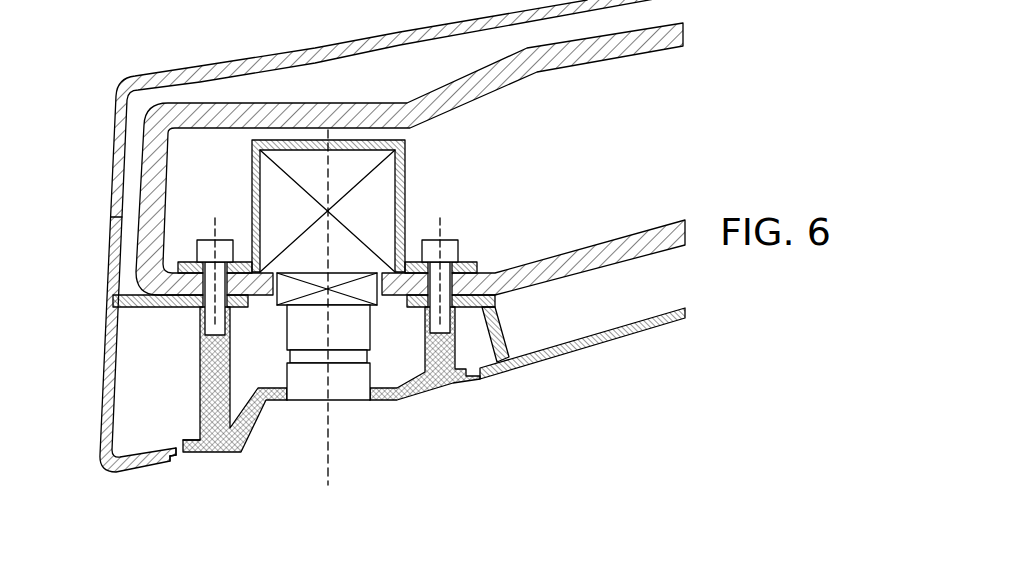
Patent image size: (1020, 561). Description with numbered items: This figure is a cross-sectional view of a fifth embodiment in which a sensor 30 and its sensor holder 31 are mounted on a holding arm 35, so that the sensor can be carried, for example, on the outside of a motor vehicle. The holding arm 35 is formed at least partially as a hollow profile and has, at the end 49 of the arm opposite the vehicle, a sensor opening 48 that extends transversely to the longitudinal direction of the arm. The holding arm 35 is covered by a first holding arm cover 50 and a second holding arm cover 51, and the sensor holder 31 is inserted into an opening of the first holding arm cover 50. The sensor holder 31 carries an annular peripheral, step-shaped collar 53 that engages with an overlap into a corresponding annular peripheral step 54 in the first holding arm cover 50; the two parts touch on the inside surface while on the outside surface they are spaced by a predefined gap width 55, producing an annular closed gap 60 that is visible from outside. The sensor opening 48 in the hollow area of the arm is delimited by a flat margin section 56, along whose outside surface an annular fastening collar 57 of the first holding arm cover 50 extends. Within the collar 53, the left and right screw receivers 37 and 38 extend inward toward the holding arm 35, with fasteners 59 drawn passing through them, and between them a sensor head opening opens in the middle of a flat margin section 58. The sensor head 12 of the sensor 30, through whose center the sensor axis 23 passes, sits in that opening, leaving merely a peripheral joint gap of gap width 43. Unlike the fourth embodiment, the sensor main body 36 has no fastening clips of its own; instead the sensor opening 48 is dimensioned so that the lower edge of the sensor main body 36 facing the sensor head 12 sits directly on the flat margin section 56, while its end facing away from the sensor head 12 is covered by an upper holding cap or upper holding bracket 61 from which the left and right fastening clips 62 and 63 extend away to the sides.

The sensor head 12 is at (327, 336).
The sensor axis 23 is at (363, 307).
The sensor 30 is at (353, 206).
The sensor holder 31 is at (321, 393).
The holding arm 35 is at (410, 184).
The sensor main body 36 is at (327, 211).
The left screw receiver 37 is at (201, 370).
The right screw receiver 38 is at (424, 348).
The gap width 43 is at (321, 379).
The sensor opening 48 is at (258, 307).
The end of the arm 49 is at (381, 248).
The first holding arm cover 50 is at (113, 250).
The second holding arm cover 51 is at (118, 188).
The step-shaped collar 53 is at (180, 436).
The annular peripheral step 54 is at (177, 458).
The gap width 55 is at (185, 463).
The flat margin section 56 is at (179, 262).
The annular fastening collar 57 is at (150, 308).
The flat margin section 58 is at (273, 387).
The fastener 59 is at (207, 242).
The annular closed gap 60 is at (476, 382).
The upper holding bracket 61 is at (252, 159).
The left fastening clip 62 is at (240, 261).
The right fastening clip 63 is at (417, 261).